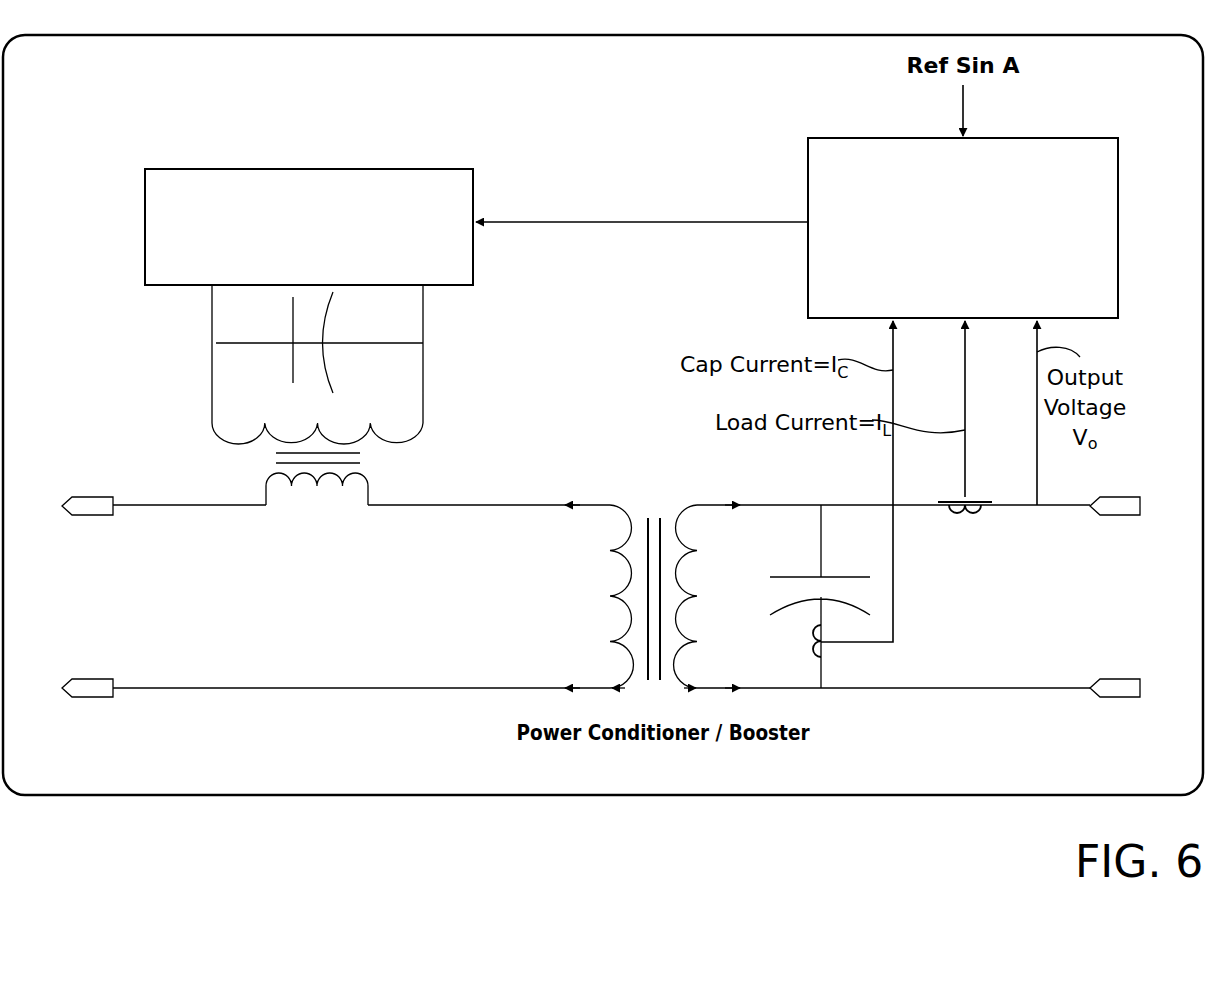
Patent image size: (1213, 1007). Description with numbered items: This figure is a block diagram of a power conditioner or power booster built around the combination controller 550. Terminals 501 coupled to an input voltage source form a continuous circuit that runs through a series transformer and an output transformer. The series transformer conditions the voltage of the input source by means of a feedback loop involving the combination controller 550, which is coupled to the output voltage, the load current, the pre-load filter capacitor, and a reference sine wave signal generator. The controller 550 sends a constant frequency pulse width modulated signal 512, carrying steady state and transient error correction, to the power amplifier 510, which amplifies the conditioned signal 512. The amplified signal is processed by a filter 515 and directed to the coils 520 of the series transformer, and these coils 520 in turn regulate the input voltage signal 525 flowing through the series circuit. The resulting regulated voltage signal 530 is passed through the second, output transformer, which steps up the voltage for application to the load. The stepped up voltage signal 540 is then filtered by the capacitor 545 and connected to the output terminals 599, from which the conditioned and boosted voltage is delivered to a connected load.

The terminals 501 is at (88, 515).
The power amplifier 510 is at (412, 276).
The pulse width modulated signal 512 is at (610, 222).
The filter 515 is at (437, 293).
The coils 520 is at (272, 437).
The input voltage signal 525 is at (178, 505).
The regulated voltage signal 530 is at (528, 505).
The stepped up voltage signal 540 is at (777, 505).
The capacitor 545 is at (793, 577).
The combination controller 550 is at (1059, 309).
The output terminals 599 is at (1118, 515).